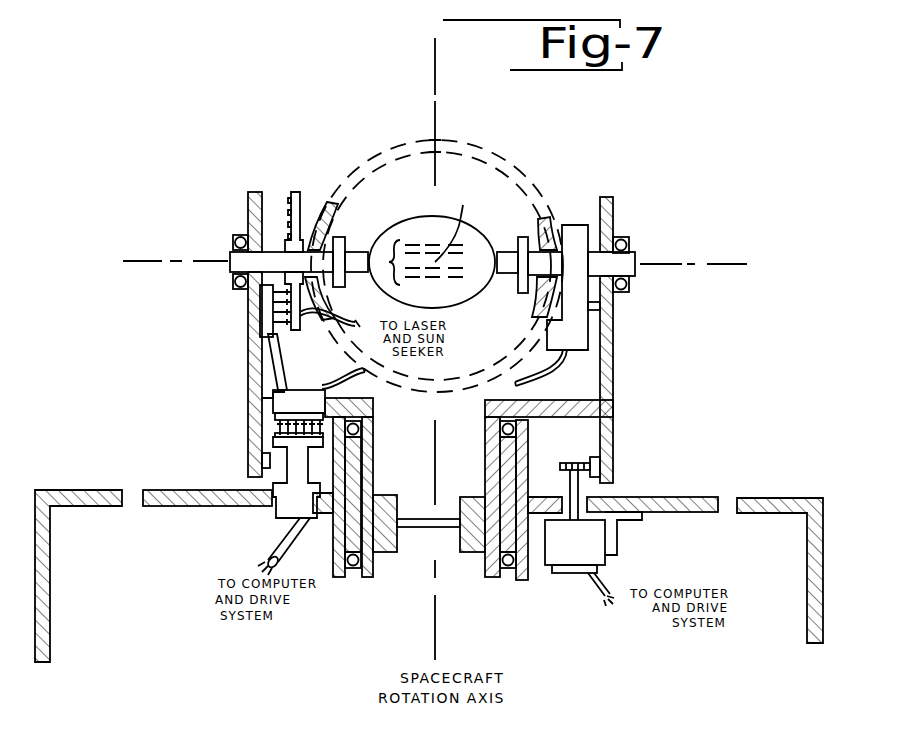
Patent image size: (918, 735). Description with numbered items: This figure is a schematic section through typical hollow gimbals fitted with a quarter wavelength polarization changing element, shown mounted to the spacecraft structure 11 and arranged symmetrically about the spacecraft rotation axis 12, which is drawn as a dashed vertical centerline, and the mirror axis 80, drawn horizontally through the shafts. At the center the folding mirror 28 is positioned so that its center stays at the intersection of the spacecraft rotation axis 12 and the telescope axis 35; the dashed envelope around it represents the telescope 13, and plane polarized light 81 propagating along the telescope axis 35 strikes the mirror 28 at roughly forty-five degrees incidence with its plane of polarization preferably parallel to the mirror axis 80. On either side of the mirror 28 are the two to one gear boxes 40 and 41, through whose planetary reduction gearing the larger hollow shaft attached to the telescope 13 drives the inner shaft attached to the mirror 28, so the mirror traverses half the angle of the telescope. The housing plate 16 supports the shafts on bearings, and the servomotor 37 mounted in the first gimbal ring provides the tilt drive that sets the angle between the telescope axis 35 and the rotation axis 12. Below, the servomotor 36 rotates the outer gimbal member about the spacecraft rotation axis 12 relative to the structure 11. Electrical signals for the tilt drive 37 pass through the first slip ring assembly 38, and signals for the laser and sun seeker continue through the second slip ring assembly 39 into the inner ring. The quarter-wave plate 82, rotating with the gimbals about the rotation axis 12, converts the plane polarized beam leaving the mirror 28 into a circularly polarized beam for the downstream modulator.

The spacecraft structure / mounting plate 11 is at (695, 497).
The spacecraft rotation axis 12 is at (435, 112).
The telescope 13 is at (506, 166).
The housing plate 16 is at (618, 202).
The folding mirror 28 is at (415, 216).
The telescope axis 35 is at (450, 225).
The servomotor 36 is at (580, 552).
The servomotor 37 is at (582, 291).
The slip ring assembly 38 is at (304, 411).
The slip ring assembly 39 is at (297, 190).
The gear box 40 is at (340, 238).
The gear box 41 is at (521, 237).
The mirror axis 80 is at (133, 259).
The plane polarized light 81 is at (417, 262).
The quarter wavelength plate 82 is at (412, 528).